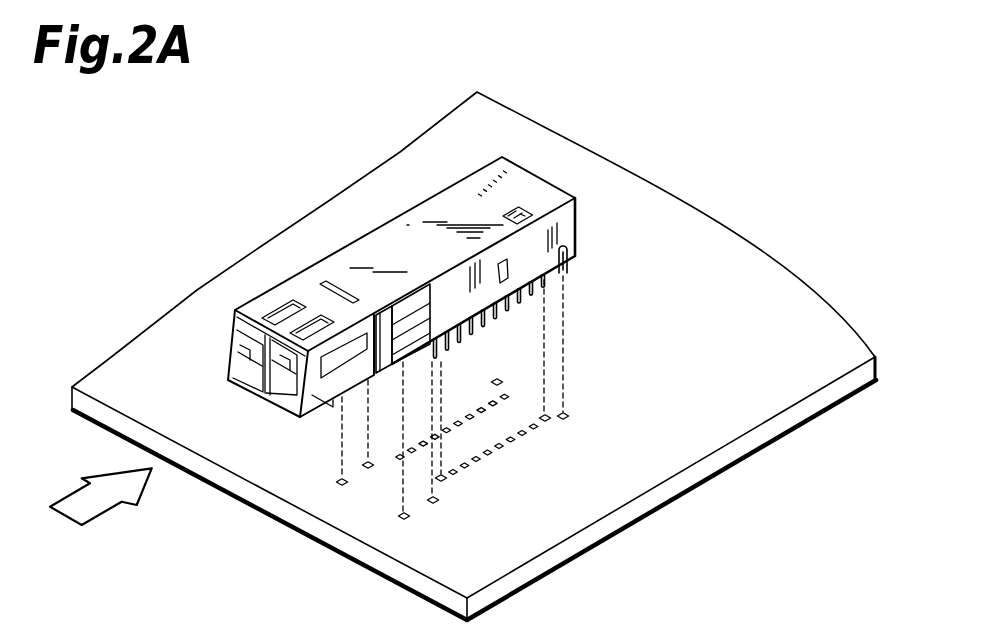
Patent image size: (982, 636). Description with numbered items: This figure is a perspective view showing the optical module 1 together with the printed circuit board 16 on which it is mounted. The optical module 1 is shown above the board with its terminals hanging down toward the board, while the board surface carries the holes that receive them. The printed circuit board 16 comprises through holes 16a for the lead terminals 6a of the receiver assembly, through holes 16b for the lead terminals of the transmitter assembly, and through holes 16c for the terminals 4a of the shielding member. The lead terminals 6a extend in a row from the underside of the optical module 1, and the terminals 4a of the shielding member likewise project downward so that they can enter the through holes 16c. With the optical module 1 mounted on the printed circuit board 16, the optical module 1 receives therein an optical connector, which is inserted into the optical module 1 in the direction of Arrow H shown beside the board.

The optical module 1 is at (412, 208).
The terminals of the shielding member 4a is at (567, 266).
The lead terminals of the receiver assembly 6a is at (552, 293).
The printed circuit board 16 is at (577, 517).
The through holes for the lead terminals of the receiver assembly 16a is at (562, 427).
The through holes for the lead terminals of the transmitter assembly 16b is at (390, 448).
The through holes for the terminals of the shielding member 16c is at (500, 381).
The Arrow H is at (90, 504).